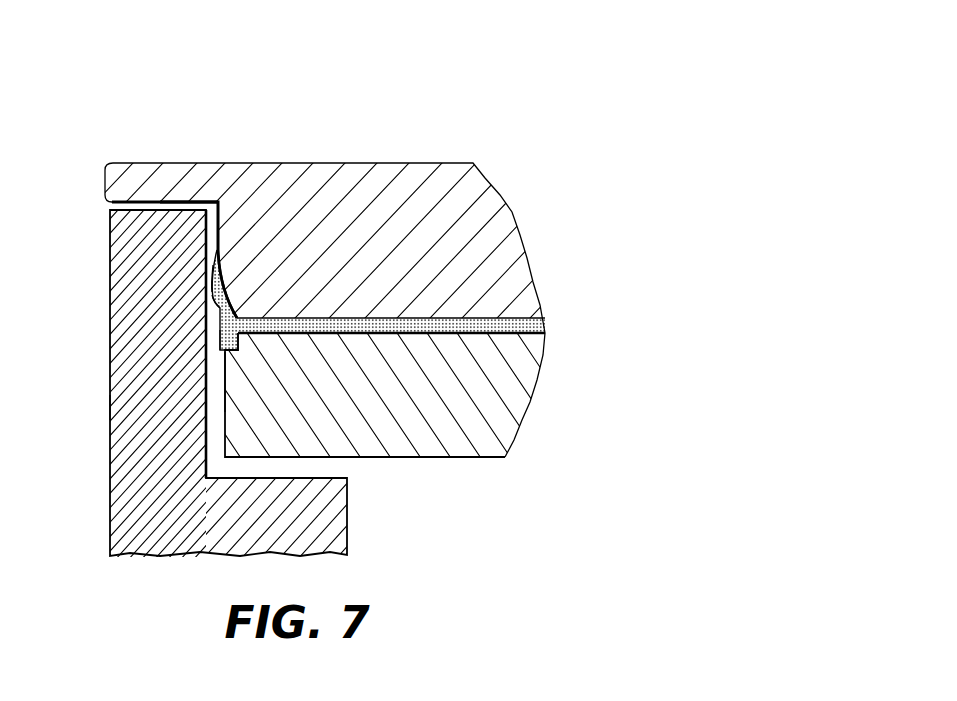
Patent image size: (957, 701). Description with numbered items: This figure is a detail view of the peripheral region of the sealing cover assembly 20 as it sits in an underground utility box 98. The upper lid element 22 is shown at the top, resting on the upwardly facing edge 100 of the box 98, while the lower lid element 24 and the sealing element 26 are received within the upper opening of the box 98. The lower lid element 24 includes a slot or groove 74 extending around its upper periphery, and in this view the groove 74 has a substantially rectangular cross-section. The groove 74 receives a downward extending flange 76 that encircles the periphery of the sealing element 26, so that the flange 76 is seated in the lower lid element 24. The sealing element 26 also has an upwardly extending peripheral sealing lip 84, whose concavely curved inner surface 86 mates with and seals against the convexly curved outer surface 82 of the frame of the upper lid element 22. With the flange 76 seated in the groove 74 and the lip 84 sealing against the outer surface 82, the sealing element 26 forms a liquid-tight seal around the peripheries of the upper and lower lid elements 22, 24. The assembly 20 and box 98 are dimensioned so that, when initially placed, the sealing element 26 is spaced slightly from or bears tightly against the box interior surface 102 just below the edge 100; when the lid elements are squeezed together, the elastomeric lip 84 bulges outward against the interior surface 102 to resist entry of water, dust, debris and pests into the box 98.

The sealing cover assembly 20 is at (538, 131).
The upper lid element 22 is at (383, 162).
The lower lid element 24 is at (290, 458).
The sealing element 26 is at (413, 330).
The slot or groove 74 is at (233, 352).
The downward extending flange 76 is at (207, 337).
The convexly curved outer surface 82 is at (207, 304).
The peripheral sealing lip 84 is at (207, 273).
The concavely curved inner surface 86 is at (233, 290).
The underground utility box 98 is at (110, 407).
The upwardly facing edge 100 is at (168, 208).
The box interior surface 102 is at (223, 290).